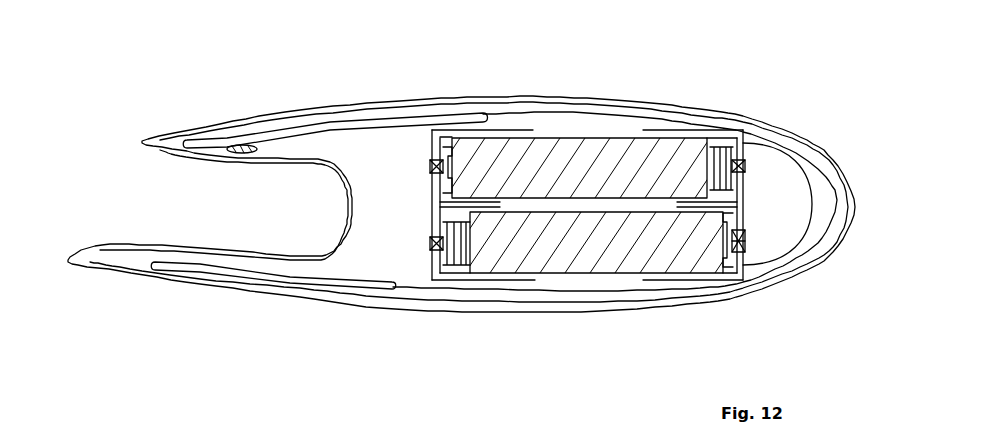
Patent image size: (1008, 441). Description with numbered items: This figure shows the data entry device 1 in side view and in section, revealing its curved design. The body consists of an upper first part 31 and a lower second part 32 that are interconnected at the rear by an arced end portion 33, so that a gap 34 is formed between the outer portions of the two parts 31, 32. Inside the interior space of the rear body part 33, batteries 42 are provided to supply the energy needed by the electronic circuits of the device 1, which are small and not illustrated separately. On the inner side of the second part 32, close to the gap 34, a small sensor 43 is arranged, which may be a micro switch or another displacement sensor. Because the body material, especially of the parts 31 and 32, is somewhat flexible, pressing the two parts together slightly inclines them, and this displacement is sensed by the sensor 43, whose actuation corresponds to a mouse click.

The data entry device 1 is at (373, 326).
The first part 31 is at (190, 277).
The second part 32 is at (298, 130).
The arced end portion 33 is at (856, 212).
The gap 34 is at (161, 178).
The batteries 42 is at (535, 281).
The sensor 43 is at (241, 145).